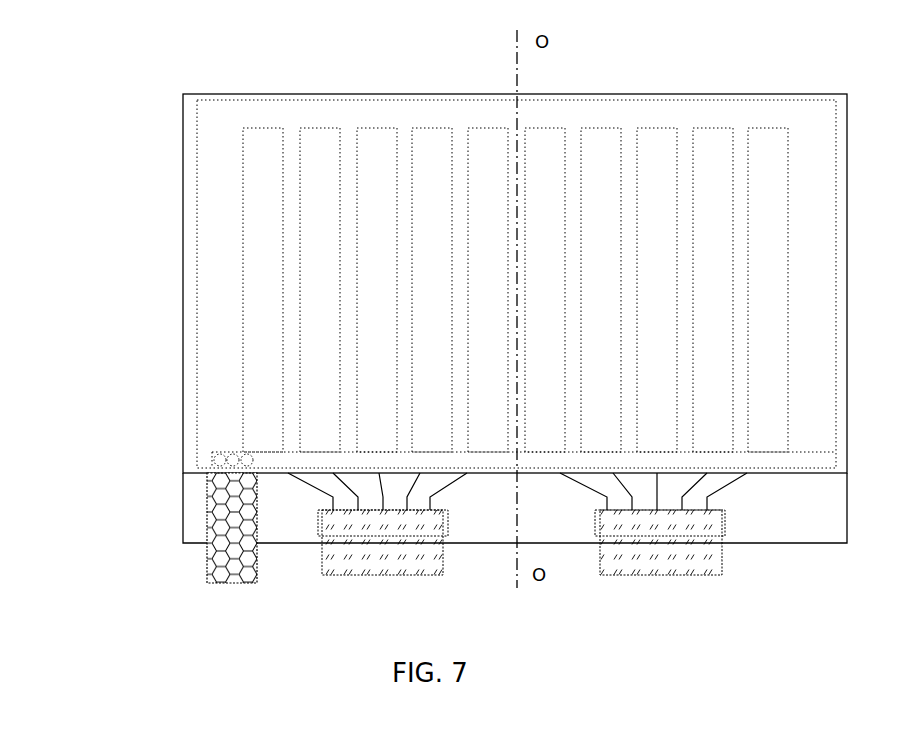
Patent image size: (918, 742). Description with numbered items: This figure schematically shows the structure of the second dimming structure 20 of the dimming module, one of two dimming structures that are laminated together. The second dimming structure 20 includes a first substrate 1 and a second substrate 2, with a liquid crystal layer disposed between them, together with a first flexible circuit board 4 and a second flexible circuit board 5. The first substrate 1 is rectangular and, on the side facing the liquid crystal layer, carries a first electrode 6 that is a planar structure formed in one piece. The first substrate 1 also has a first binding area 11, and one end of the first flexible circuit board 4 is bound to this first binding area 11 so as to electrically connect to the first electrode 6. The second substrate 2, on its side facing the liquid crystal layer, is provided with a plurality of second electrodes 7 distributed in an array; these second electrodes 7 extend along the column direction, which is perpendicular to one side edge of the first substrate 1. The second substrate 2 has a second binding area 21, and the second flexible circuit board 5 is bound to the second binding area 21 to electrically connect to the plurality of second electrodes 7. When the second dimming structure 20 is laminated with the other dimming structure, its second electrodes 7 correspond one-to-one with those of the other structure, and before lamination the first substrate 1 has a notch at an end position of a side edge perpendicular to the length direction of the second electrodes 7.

The second dimming structure 20 is at (80, 560).
The first substrate 1 is at (190, 270).
The first electrode 6 is at (225, 318).
The second electrodes 7 is at (260, 380).
The first binding area 11 is at (210, 466).
The second substrate 2 is at (195, 503).
The first flexible circuit board 4 is at (208, 568).
The second flexible circuit board 5 is at (350, 563).
The second binding area 21 is at (447, 525).